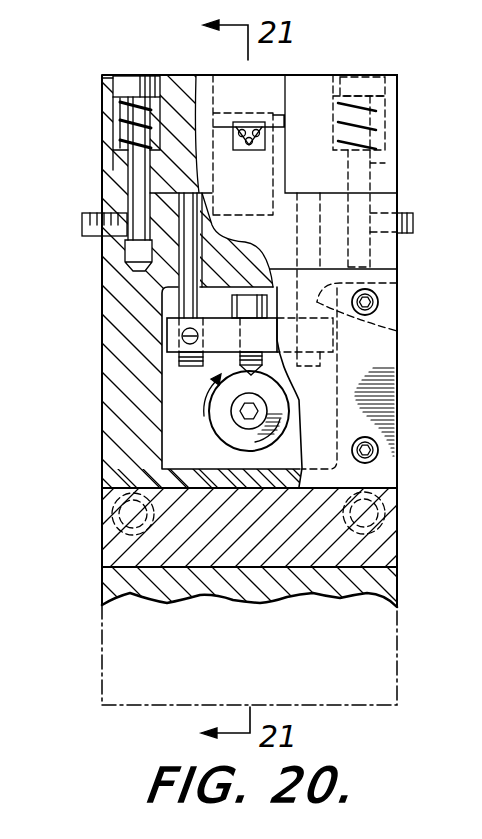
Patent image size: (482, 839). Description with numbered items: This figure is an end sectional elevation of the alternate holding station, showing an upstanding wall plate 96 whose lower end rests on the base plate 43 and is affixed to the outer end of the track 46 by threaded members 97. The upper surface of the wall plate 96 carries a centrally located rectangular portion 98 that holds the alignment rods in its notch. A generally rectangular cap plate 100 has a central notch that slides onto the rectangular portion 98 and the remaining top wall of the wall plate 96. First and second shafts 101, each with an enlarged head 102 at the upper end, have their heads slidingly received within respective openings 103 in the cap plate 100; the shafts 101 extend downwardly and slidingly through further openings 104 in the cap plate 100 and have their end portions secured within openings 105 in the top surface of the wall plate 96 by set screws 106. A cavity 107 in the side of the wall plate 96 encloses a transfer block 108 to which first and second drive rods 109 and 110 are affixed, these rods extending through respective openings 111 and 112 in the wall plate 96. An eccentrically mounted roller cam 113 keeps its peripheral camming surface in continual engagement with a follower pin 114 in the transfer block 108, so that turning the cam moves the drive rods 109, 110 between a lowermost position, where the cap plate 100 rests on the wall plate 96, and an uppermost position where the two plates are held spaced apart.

The base plate 43 is at (102, 672).
The track 46 is at (232, 558).
The wall plate 96 is at (110, 416).
The threaded members 97 is at (112, 530).
The rectangular portion 98 is at (267, 170).
The cap plate 100 is at (106, 83).
The shafts 101 is at (114, 172).
The enlarged head 102 is at (129, 81).
The openings 103 is at (112, 118).
The further openings 104 is at (128, 170).
The openings 105 is at (126, 250).
The set screws 106 is at (82, 223).
The cavity 107 is at (168, 373).
The transfer block 108 is at (167, 336).
The first drive rod 109 is at (179, 304).
The second drive rod 110 is at (383, 283).
The opening 111 is at (207, 237).
The opening 112 is at (375, 330).
The eccentrically mounted roller cam 113 is at (218, 425).
The follower pin 114 is at (252, 374).